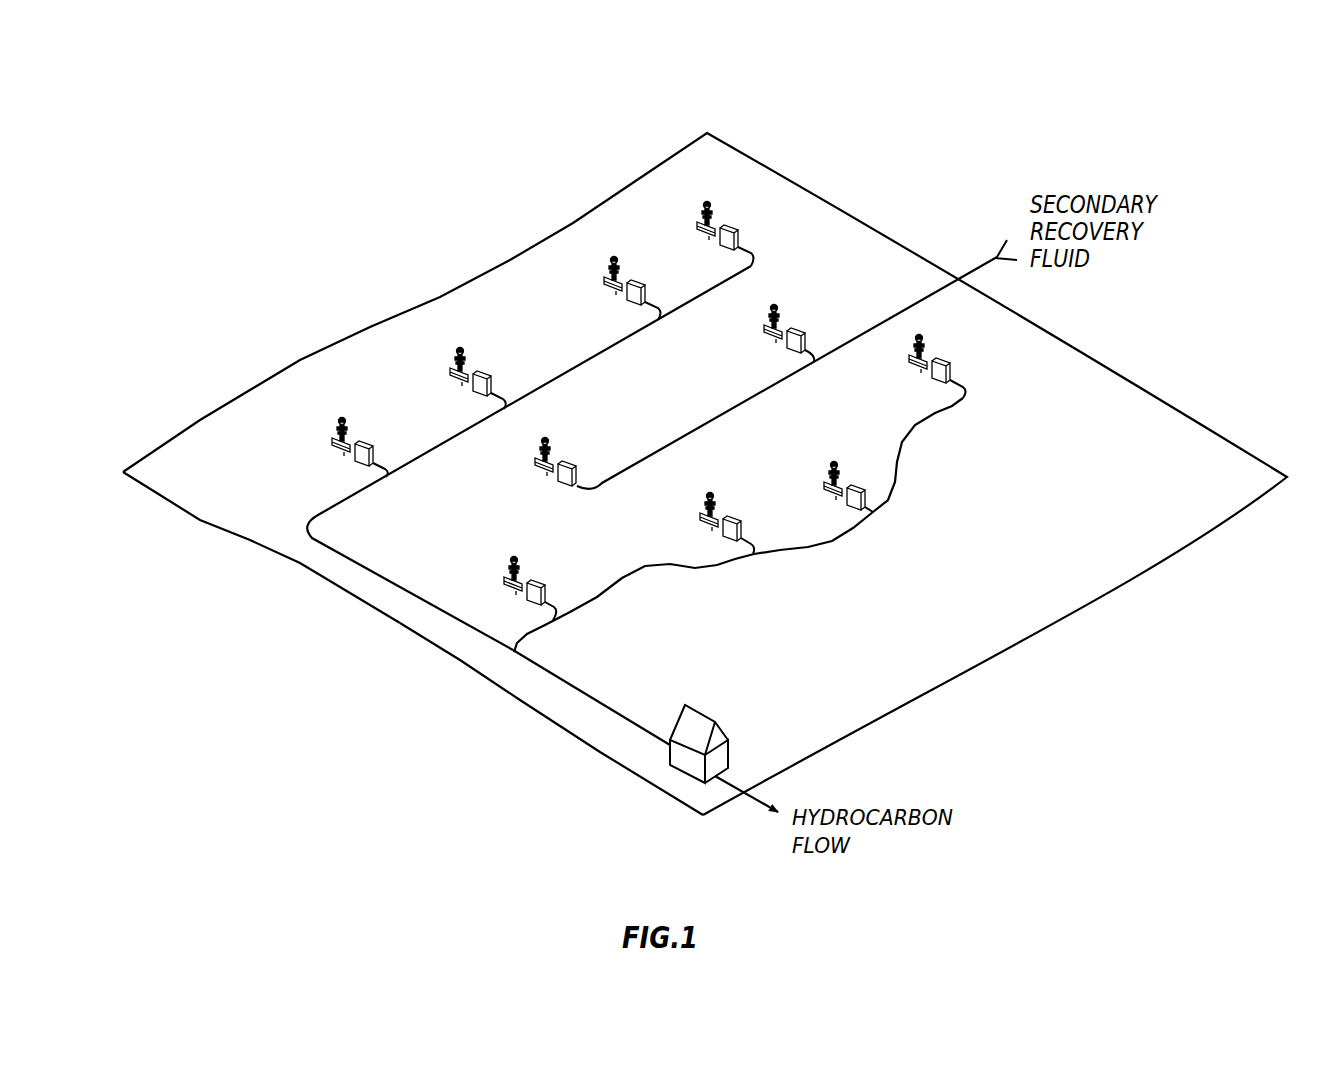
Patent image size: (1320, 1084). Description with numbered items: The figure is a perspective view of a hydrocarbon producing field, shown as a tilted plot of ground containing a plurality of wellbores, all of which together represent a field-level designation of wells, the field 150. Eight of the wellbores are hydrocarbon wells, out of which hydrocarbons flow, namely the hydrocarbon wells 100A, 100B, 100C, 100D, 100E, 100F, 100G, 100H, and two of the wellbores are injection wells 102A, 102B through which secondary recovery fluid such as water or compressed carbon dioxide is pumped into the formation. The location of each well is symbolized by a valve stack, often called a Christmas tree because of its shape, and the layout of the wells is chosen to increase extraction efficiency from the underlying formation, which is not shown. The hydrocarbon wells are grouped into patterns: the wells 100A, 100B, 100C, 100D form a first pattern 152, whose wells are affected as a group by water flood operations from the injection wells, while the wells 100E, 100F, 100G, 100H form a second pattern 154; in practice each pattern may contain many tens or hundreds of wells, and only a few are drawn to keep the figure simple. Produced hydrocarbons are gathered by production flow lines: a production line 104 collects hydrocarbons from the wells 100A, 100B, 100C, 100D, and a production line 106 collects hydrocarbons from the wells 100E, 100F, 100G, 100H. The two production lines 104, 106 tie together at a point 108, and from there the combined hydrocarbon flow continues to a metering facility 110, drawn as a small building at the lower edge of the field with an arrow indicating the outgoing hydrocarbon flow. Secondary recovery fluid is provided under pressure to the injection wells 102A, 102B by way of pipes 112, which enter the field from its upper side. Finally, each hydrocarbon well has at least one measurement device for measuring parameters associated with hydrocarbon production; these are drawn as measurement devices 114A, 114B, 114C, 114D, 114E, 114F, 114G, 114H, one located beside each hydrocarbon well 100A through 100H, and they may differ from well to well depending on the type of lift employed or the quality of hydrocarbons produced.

The field 150 is at (762, 108).
The first pattern 152 is at (253, 563).
The second pattern 154 is at (475, 690).
The hydrocarbon well 100A is at (687, 202).
The hydrocarbon well 100B is at (608, 253).
The hydrocarbon well 100C is at (440, 343).
The hydrocarbon well 100D is at (320, 422).
The hydrocarbon well 100E is at (975, 387).
The hydrocarbon well 100F is at (907, 507).
The hydrocarbon well 100G is at (763, 567).
The hydrocarbon well 100H is at (495, 598).
The injection well 102A is at (788, 302).
The injection well 102B is at (560, 438).
The production line 104 is at (373, 577).
The production line 106 is at (597, 597).
The point 108 is at (515, 677).
The metering facility 110 is at (673, 775).
The pipes 112 is at (930, 297).
The measurement device 114A is at (730, 227).
The measurement device 114B is at (630, 303).
The measurement device 114C is at (477, 397).
The measurement device 114D is at (363, 467).
The measurement device 114E is at (948, 362).
The measurement device 114F is at (860, 490).
The measurement device 114G is at (740, 523).
The measurement device 114H is at (540, 580).